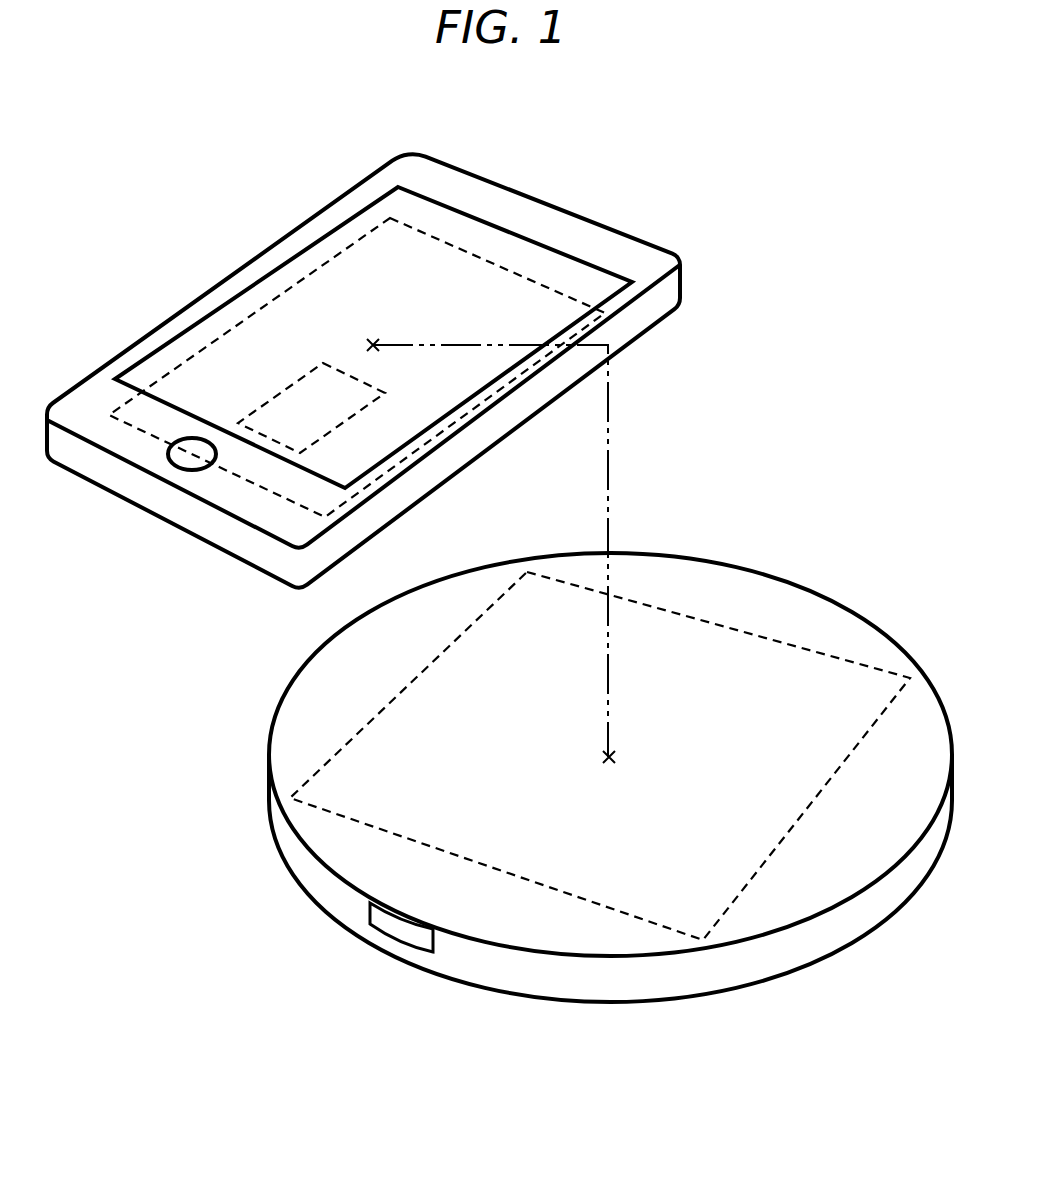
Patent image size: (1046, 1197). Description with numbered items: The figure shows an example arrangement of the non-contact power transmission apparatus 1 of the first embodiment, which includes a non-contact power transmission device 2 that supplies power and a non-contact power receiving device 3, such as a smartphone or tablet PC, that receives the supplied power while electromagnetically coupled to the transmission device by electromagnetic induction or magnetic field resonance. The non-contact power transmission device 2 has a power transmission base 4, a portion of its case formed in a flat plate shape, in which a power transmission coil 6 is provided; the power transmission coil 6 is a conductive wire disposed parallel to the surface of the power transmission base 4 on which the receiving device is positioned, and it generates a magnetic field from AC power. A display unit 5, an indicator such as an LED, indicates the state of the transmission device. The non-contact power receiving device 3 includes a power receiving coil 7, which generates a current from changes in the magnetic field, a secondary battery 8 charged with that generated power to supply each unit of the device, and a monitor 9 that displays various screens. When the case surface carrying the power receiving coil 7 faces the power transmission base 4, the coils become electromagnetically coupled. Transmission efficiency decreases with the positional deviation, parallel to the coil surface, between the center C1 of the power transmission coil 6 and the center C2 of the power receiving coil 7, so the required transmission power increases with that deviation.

The non-contact power transmission apparatus 1 is at (180, 147).
The non-contact power transmission device 2 is at (872, 627).
The non-contact power receiving device 3 is at (553, 204).
The power transmission base 4 is at (823, 613).
The display unit 5 is at (395, 938).
The power transmission coil 6 is at (753, 633).
The power receiving coil 7 is at (190, 354).
The secondary battery 8 is at (289, 387).
The monitor 9 is at (323, 236).
The center of the power transmission coil C1 is at (608, 766).
The center of the power receiving coil C2 is at (371, 340).